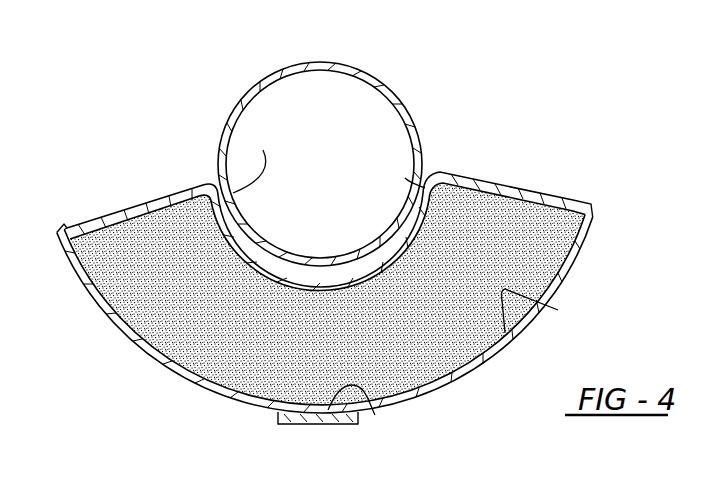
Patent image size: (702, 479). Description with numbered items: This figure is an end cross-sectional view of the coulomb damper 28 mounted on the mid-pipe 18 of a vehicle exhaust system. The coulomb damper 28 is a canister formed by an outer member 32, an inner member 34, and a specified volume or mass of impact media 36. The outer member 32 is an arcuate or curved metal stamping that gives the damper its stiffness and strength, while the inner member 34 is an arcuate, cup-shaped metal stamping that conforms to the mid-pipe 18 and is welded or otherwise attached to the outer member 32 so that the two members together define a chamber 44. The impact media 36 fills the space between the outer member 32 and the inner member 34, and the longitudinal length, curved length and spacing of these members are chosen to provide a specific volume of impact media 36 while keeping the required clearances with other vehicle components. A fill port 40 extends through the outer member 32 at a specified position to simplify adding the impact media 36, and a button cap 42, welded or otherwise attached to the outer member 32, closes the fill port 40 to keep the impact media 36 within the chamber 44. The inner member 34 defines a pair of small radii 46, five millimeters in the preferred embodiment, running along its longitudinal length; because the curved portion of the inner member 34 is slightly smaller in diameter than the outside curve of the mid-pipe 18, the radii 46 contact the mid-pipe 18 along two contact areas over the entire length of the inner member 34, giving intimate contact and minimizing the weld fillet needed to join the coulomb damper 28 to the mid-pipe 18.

The mid-pipe 18 is at (362, 70).
The coulomb damper 28 is at (163, 397).
The outer member 32 is at (470, 366).
The inner member 34 is at (517, 187).
The impact media 36 is at (173, 288).
The fill port 40 is at (375, 415).
The button cap 42 is at (287, 424).
The chamber 44 is at (558, 310).
The small radii 46 is at (263, 150).